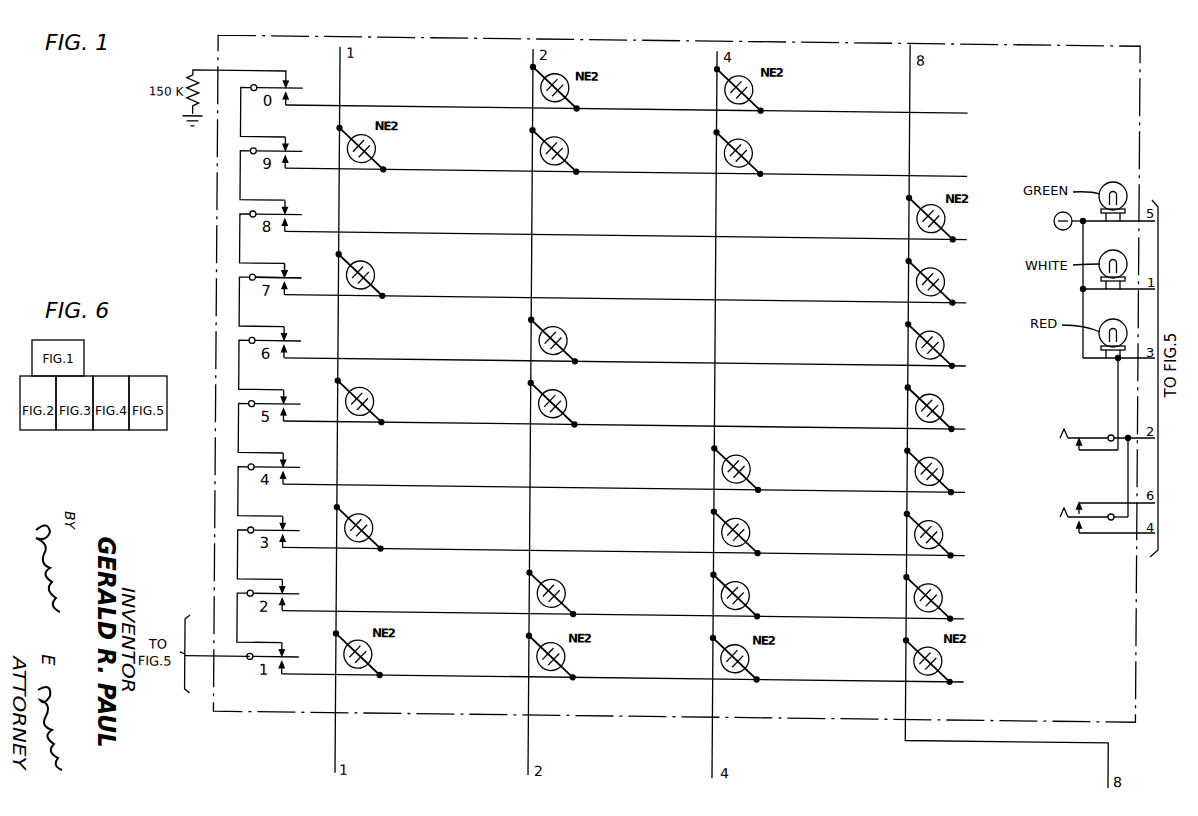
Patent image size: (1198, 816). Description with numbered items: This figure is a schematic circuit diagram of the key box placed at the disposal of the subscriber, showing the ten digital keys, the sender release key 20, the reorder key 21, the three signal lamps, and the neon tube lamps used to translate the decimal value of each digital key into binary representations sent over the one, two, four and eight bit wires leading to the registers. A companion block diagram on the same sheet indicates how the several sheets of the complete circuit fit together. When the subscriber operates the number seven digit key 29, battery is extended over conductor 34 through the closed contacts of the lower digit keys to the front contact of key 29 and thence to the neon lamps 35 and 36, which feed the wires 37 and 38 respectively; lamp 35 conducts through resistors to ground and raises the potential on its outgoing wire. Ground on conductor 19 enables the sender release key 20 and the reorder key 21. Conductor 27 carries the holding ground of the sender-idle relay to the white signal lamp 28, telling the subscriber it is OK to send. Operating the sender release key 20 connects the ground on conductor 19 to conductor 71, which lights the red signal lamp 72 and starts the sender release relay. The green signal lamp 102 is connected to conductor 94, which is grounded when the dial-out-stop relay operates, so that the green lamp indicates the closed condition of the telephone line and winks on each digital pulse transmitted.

The number 7 digit key 29 is at (290, 274).
The neon lamp 35 is at (372, 267).
The wire 37 is at (340, 327).
The neon lamp 36 is at (942, 264).
The wire 38 is at (910, 305).
The conductor 34 is at (217, 658).
The green signal lamp 102 is at (1112, 182).
The conductor 94 is at (1145, 223).
The white signal lamp 28 is at (1102, 258).
The conductor 27 is at (1145, 291).
The red signal lamp 72 is at (1102, 327).
The conductor 71 is at (1148, 362).
The sender release key 20 is at (1063, 446).
The conductor 19 is at (1148, 441).
The reorder key 21 is at (1063, 524).